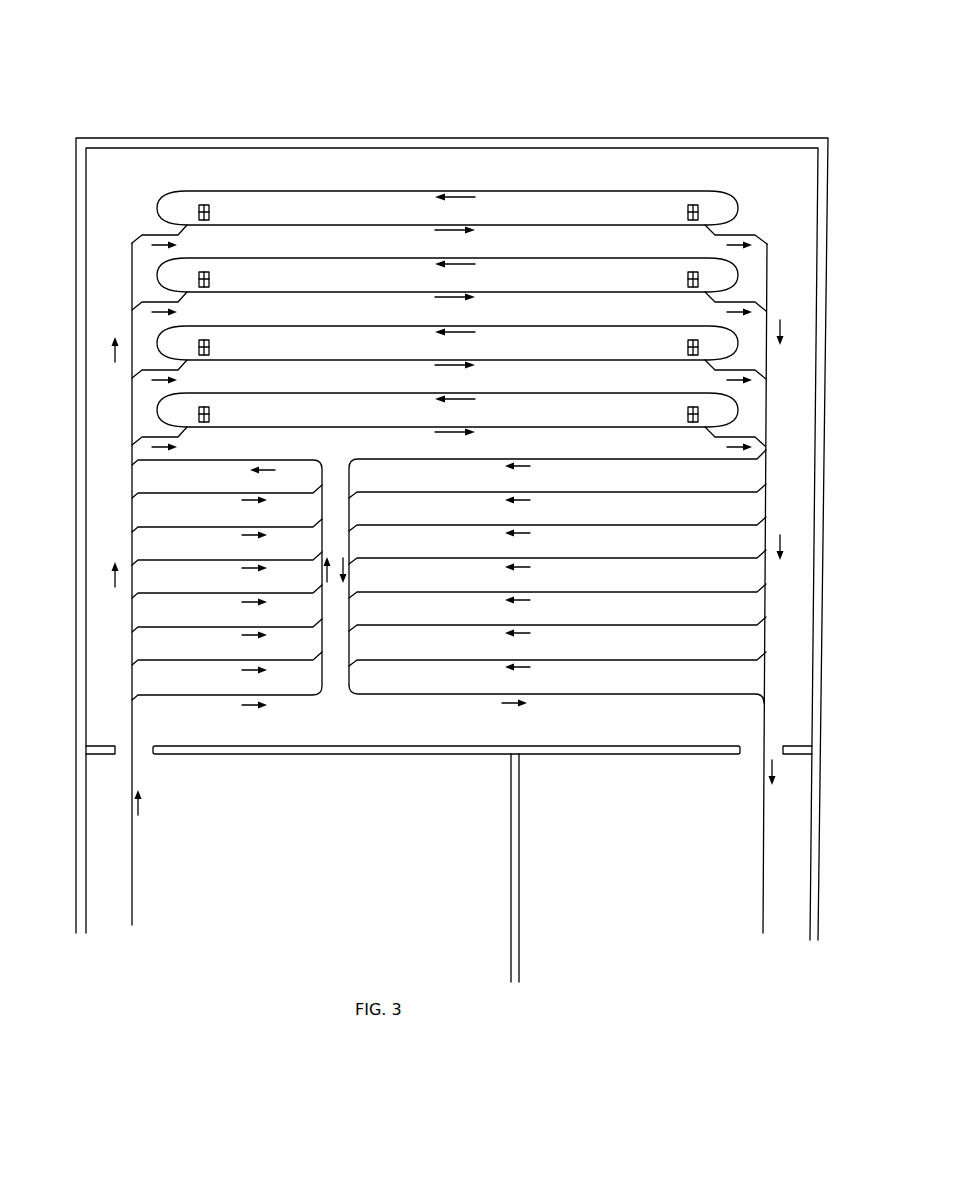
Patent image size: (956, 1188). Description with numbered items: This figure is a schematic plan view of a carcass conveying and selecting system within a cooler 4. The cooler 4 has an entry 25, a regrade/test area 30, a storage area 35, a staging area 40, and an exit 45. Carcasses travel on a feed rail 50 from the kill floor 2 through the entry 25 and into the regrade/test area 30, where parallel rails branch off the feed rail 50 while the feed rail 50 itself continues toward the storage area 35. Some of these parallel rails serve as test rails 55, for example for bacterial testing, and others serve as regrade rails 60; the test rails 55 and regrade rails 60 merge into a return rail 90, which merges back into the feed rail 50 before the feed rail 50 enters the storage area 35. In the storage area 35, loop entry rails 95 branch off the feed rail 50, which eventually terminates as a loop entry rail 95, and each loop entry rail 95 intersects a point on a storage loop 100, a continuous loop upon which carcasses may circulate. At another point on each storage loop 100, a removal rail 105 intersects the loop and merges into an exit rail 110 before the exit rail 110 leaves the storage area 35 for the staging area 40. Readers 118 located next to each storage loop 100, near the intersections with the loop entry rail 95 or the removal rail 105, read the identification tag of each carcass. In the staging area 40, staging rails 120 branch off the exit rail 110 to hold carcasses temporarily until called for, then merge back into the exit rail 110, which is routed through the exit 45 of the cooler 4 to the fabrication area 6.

The kill floor 2 is at (174, 889).
The cooler 4 is at (458, 795).
The fabrication area 6 is at (707, 889).
The entry 25 is at (152, 759).
The regrade/test area 30 is at (420, 544).
The storage area 35 is at (451, 539).
The staging area 40 is at (831, 653).
The exit 45 is at (749, 764).
The feed rail 50 is at (131, 584).
The test rails 55 is at (202, 668).
The regrade rails 60 is at (202, 500).
The return rail 90 is at (206, 466).
The loop entry rails 95 is at (150, 228).
The storage loop 100 is at (368, 221).
The removal rail 105 is at (752, 232).
The exit rail 110 is at (455, 724).
The readers 118 is at (216, 212).
The staging rails 120 is at (565, 450).